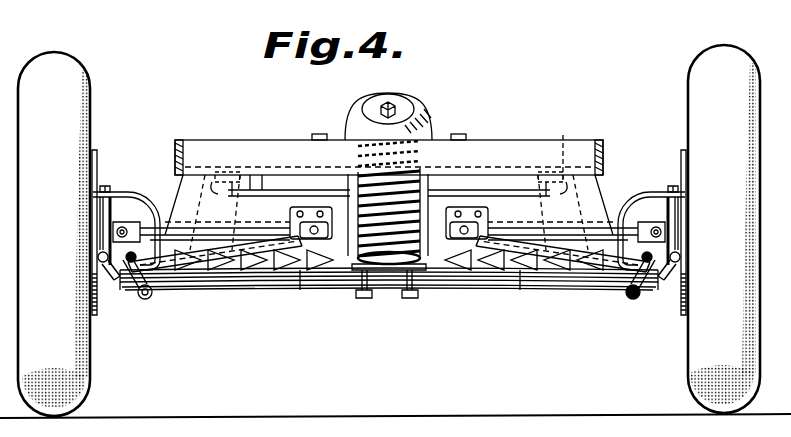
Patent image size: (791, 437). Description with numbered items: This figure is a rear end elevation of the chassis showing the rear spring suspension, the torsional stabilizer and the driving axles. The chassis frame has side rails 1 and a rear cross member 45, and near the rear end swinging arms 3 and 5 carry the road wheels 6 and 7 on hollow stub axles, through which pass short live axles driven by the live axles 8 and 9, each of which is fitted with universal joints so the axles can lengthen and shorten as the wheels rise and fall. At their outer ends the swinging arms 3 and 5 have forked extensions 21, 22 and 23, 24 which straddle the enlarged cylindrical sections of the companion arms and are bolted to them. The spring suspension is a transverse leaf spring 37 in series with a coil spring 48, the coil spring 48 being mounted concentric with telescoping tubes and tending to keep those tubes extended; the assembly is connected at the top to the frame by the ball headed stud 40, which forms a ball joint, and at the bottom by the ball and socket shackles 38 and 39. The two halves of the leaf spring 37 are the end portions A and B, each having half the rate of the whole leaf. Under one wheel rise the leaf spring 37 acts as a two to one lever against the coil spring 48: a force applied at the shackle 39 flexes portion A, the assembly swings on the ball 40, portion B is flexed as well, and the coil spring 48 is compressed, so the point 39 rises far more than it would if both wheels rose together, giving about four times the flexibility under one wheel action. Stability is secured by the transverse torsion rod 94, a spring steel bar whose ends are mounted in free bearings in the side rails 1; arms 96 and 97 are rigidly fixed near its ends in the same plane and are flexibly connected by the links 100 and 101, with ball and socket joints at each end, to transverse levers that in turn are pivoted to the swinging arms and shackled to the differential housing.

The side rail 1 is at (183, 140).
The swinging arm 3 is at (572, 265).
The swinging arm 5 is at (208, 262).
The road wheel 6 is at (724, 229).
The road wheel 7 is at (54, 234).
The live axle 8 is at (593, 228).
The live axle 9 is at (150, 222).
The forked extension 21 is at (118, 186).
The forked extension 22 is at (108, 288).
The forked extension 23 is at (648, 192).
The forked extension 24 is at (668, 280).
The leaf spring 37 is at (466, 288).
The ball and socket shackle 38 is at (642, 296).
The ball and socket shackle 39 is at (168, 296).
The ball headed stud 40 is at (408, 108).
The cross member 45 is at (283, 166).
The coil spring 48 is at (418, 197).
The torsion rod 94 is at (475, 167).
The arm 96 is at (543, 187).
The arm 97 is at (232, 188).
The link 100 is at (538, 224).
The link 101 is at (245, 224).
The end of leaf spring A is at (315, 282).
The end of leaf spring B is at (520, 284).